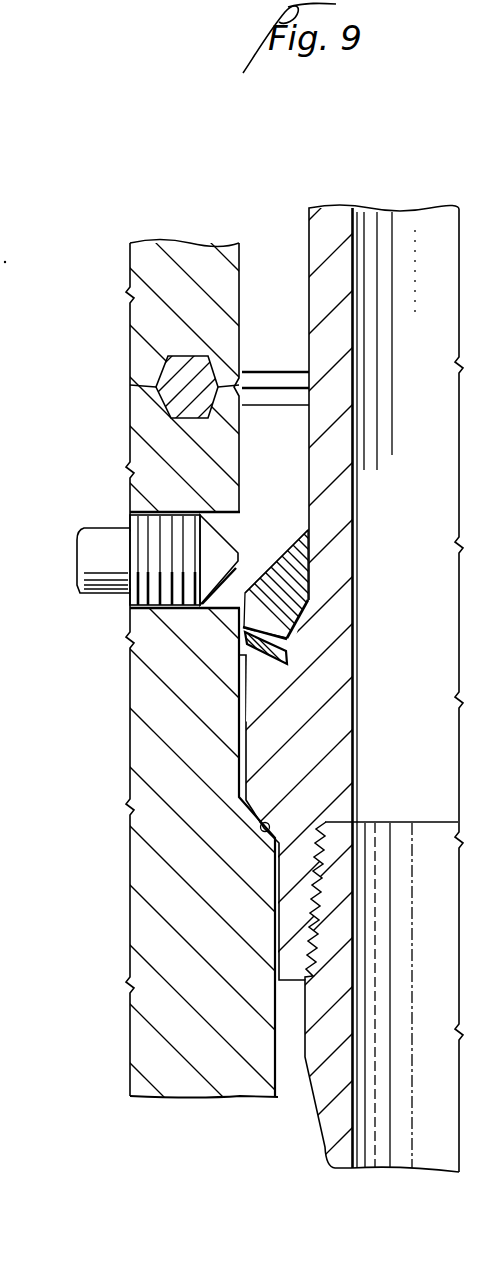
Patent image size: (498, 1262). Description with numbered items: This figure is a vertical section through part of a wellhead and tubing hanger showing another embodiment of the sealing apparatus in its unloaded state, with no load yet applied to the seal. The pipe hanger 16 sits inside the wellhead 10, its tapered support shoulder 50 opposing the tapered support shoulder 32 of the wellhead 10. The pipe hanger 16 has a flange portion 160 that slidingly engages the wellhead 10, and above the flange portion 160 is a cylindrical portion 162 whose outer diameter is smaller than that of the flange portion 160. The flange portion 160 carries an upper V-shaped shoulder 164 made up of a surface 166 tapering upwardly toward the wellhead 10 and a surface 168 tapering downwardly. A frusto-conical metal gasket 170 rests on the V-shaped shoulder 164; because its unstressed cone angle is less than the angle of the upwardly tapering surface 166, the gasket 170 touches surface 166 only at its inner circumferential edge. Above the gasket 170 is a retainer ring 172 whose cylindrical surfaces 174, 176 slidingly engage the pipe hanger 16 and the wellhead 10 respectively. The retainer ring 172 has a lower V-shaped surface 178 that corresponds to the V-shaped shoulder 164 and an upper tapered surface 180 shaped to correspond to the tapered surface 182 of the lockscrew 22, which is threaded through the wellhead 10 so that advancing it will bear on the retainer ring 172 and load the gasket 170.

The wellhead 10 is at (165, 908).
The pipe hanger 16 is at (330, 702).
The lockscrew 22 is at (104, 535).
The tapered support shoulder 32 is at (266, 828).
The tapered support shoulder 50 is at (267, 825).
The flange portion 160 is at (263, 702).
The cylindrical portion 162 is at (307, 230).
The V-shaped shoulder 164 is at (258, 665).
The surface tapering upwardly 166 is at (253, 645).
The surface tapering downwardly 168 is at (300, 640).
The frusto-conical metal gasket 170 is at (282, 648).
The retainer ring 172 is at (297, 570).
The cylindrical surface 174 is at (310, 552).
The cylindrical surface 176 is at (240, 604).
The lower V-shaped surface 178 is at (288, 615).
The upper tapered surface 180 is at (296, 545).
The tapered surface 182 is at (243, 520).